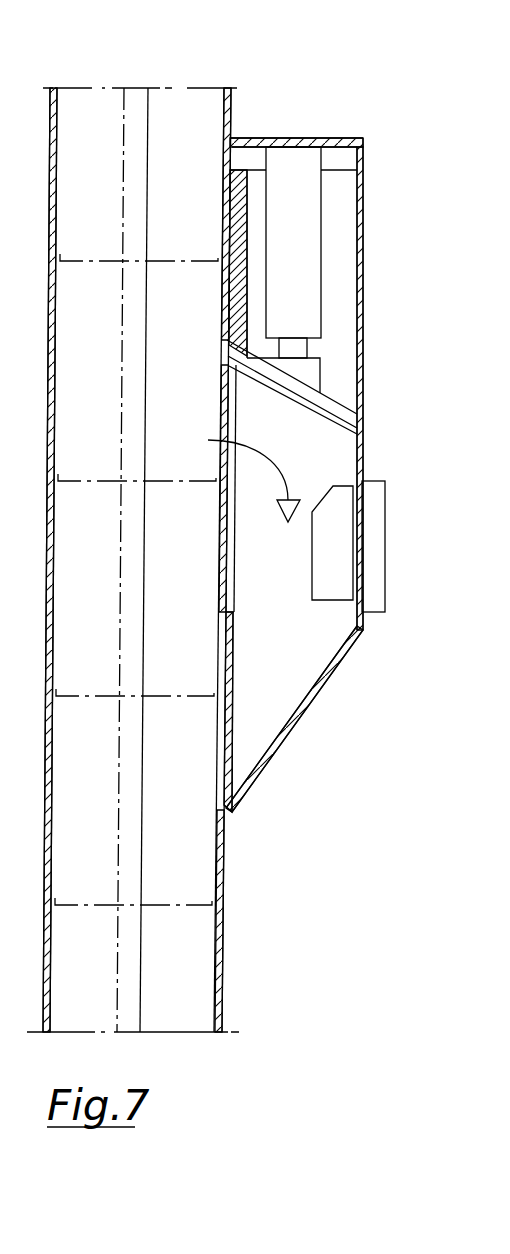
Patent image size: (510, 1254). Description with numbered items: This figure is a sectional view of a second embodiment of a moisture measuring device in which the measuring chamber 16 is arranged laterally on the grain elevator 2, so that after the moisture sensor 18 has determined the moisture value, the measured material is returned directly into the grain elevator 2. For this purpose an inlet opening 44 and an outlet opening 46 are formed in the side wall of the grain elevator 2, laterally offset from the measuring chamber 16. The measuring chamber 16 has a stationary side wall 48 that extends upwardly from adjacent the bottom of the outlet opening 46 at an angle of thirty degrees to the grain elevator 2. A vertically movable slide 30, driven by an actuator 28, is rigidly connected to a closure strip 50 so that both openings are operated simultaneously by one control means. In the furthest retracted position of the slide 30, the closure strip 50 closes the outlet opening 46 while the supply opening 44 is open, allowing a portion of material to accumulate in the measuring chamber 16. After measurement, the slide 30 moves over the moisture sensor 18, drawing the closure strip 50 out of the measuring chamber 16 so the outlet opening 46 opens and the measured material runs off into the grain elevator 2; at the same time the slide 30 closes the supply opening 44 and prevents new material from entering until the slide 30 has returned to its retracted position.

The grain elevator 2 is at (172, 122).
The actuating cylinder 28 is at (305, 249).
The slide 30 is at (340, 415).
The moisture sensor 18 is at (337, 505).
The inlet opening 44 is at (222, 417).
The measuring chamber 16 is at (285, 582).
The outlet opening 46 is at (217, 732).
The closure strip 50 is at (227, 715).
The stationary side wall 48 is at (285, 730).